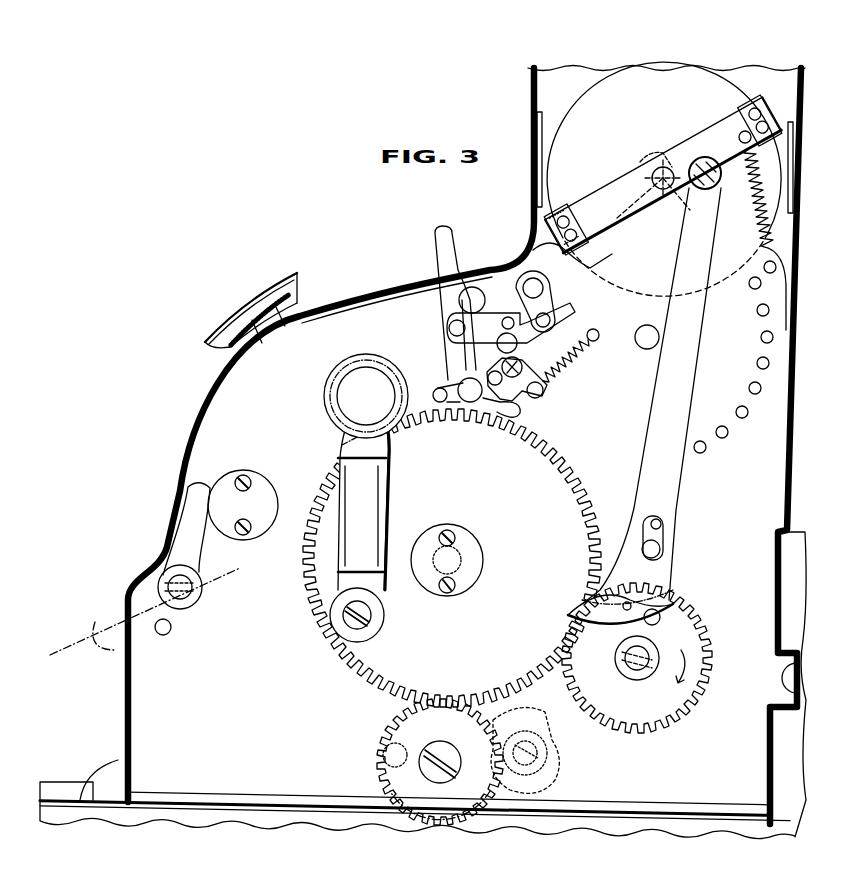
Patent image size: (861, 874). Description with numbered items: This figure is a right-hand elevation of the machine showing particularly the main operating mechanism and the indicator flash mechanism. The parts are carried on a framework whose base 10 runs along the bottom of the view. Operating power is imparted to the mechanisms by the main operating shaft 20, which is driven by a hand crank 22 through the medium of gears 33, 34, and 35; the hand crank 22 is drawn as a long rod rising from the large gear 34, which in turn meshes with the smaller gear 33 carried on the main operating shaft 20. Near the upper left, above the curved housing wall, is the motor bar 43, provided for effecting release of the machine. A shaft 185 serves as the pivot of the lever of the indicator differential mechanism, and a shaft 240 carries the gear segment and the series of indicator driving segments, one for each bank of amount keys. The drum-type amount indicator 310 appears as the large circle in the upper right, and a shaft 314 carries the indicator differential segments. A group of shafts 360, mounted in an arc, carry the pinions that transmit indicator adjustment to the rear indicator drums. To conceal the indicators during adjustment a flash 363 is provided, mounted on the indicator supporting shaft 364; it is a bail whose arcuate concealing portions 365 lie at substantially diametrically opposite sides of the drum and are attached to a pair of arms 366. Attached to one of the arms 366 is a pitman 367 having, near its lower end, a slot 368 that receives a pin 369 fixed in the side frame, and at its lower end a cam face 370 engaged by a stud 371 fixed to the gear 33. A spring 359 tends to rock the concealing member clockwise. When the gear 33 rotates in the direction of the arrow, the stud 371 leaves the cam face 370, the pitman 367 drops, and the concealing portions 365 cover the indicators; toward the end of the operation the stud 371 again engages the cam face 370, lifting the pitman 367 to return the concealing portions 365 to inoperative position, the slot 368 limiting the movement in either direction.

The base 10 is at (232, 803).
The main operating shaft 20 is at (618, 657).
The hand crank 22 is at (380, 482).
The gear 33 is at (660, 720).
The gear 34 is at (357, 674).
The gear 35 is at (324, 410).
The motor bar 43 is at (299, 288).
The shaft 185 is at (545, 757).
The shaft 240 is at (462, 557).
The amount indicator 310 is at (580, 116).
The shaft 314 is at (640, 330).
The spring 359 is at (748, 166).
The shafts 360 is at (760, 332).
The flash 363 is at (660, 168).
The indicator supporting shaft 364 is at (654, 207).
The concealing portions 365 is at (559, 213).
The arms 366 is at (655, 161).
The pitman 367 is at (656, 396).
The slot 368 is at (664, 526).
The pin 369 is at (662, 550).
The cam face 370 is at (632, 602).
The stud 371 is at (644, 620).